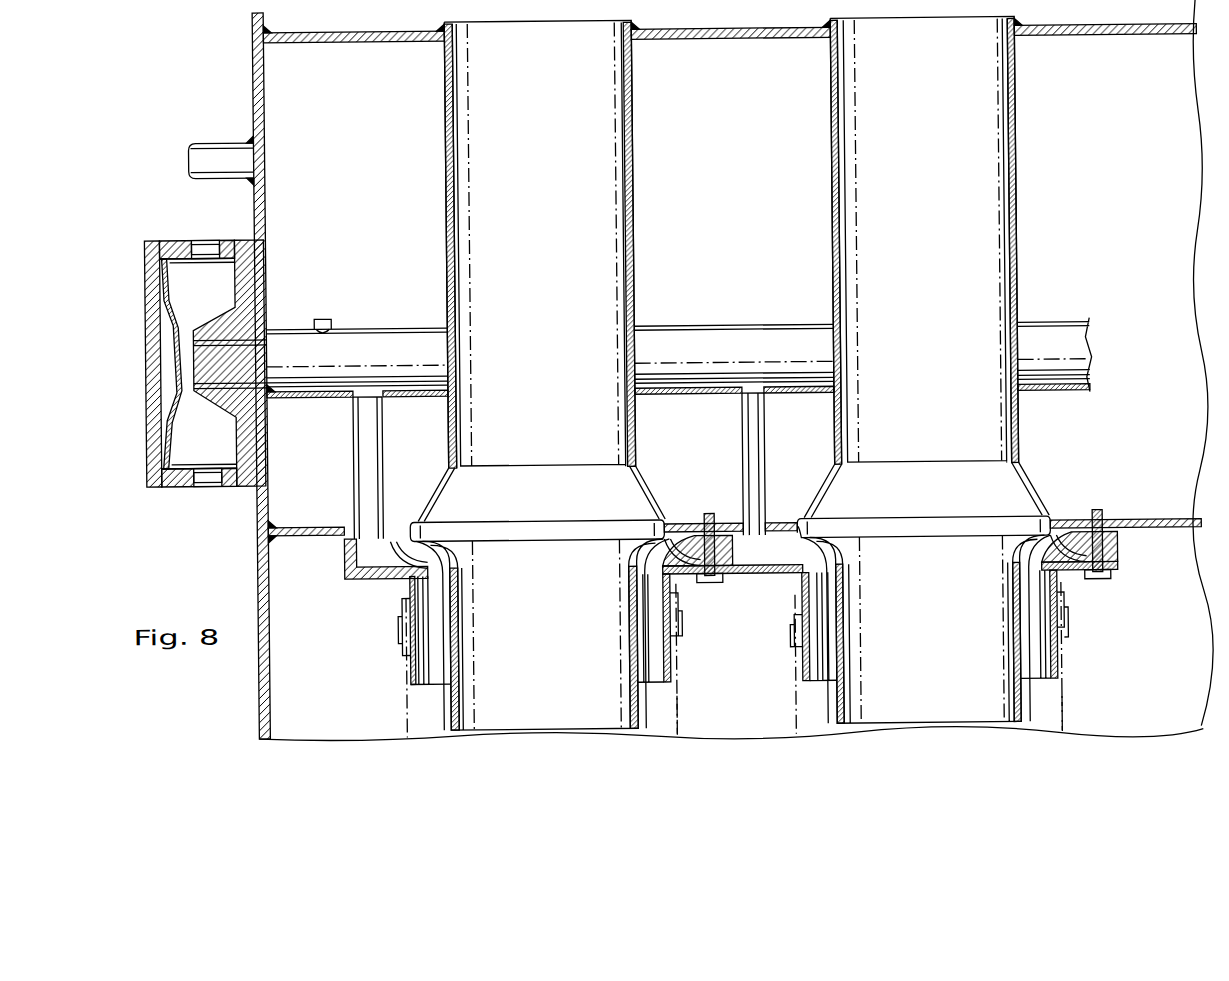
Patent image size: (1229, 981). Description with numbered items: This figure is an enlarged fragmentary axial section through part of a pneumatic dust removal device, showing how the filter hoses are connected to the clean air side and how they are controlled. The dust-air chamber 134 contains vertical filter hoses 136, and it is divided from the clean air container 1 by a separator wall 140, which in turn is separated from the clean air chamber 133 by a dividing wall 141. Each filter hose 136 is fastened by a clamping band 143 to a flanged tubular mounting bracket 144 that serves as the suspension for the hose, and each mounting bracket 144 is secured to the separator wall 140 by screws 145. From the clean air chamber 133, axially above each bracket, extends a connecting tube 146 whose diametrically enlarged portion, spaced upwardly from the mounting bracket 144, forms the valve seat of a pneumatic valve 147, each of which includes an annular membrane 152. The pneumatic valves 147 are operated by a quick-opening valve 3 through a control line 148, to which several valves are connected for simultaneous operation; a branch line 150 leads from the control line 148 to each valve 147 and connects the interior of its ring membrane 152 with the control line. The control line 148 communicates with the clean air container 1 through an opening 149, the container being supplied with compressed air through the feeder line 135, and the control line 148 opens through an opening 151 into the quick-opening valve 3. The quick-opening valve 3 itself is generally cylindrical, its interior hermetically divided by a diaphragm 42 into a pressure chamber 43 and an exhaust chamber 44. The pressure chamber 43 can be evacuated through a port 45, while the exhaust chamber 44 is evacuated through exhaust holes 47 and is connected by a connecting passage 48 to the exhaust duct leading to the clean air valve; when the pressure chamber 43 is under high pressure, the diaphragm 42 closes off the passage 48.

The clean air container 1 is at (1103, 198).
The quick-opening valve 3 is at (173, 490).
The diaphragm 42 is at (175, 292).
The pressure chamber 43 is at (155, 318).
The exhaust chamber 44 is at (166, 424).
The port 45 is at (154, 352).
The exhaust holes 47 is at (213, 252).
The connecting passage 48 is at (219, 387).
The clean air chamber 133 is at (694, 30).
The dust-air chamber 134 is at (697, 691).
The feeder line 135 is at (216, 158).
The filter hose 136 is at (675, 716).
The separator wall 140 is at (1136, 530).
The dividing wall 141 is at (1126, 40).
The clamping band 143 is at (675, 642).
The flanged tubular mounting bracket 144 is at (671, 606).
The screws 145 is at (711, 588).
The connecting tube 146 is at (640, 474).
The pneumatic valve 147 is at (361, 592).
The control line 148 is at (384, 350).
The opening 149 is at (325, 319).
The branch line 150 is at (376, 459).
The opening 151 is at (267, 383).
The annular membrane 152 is at (433, 547).